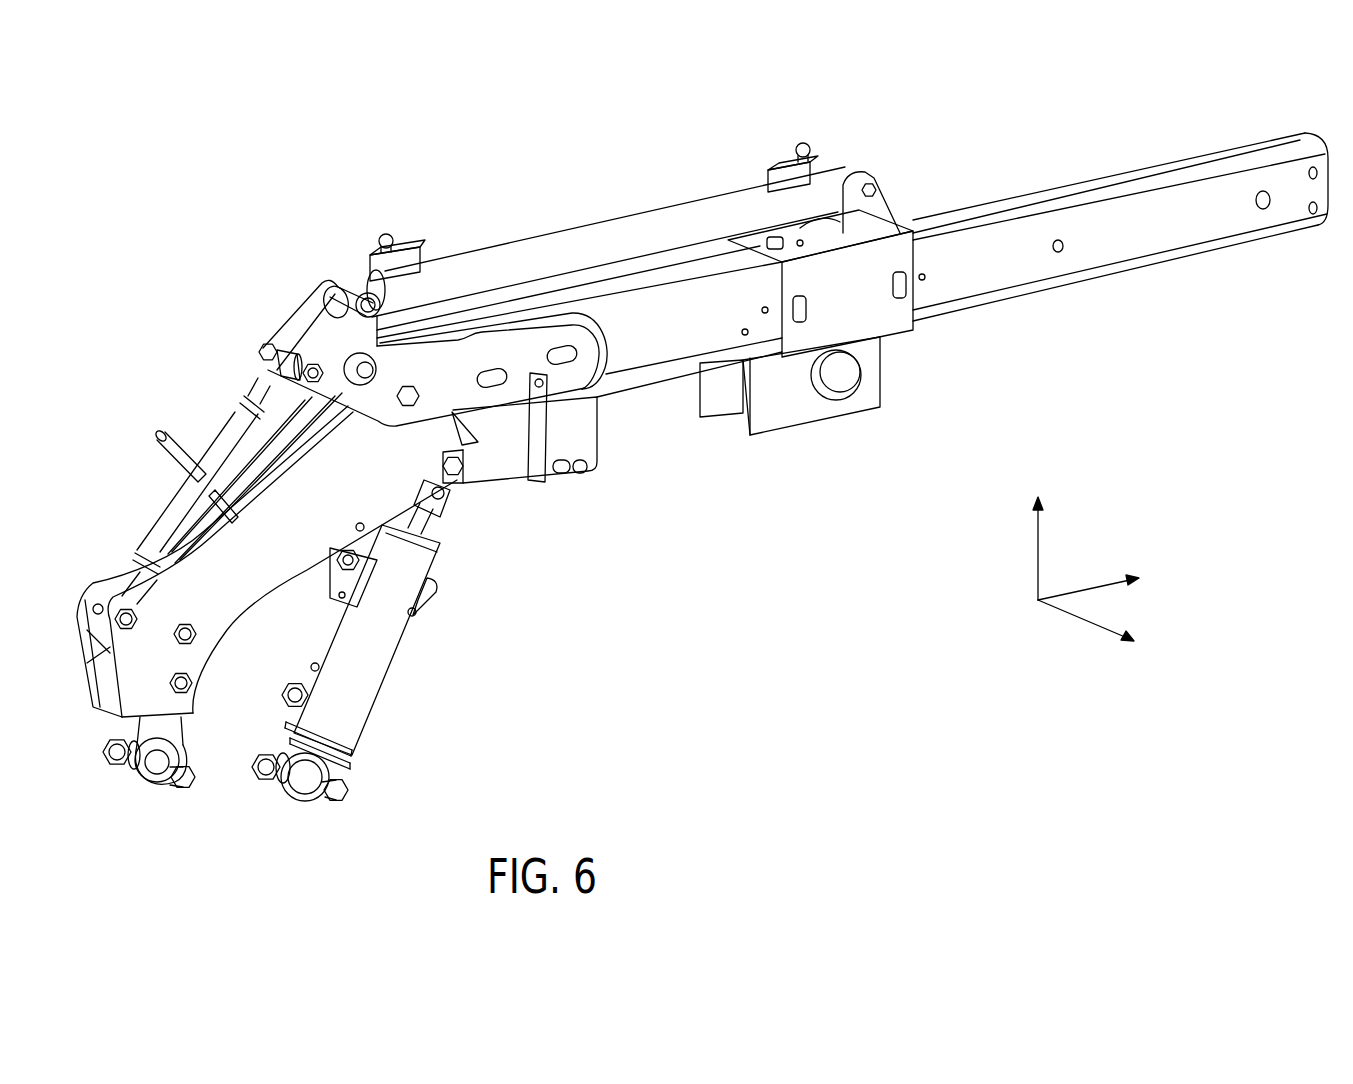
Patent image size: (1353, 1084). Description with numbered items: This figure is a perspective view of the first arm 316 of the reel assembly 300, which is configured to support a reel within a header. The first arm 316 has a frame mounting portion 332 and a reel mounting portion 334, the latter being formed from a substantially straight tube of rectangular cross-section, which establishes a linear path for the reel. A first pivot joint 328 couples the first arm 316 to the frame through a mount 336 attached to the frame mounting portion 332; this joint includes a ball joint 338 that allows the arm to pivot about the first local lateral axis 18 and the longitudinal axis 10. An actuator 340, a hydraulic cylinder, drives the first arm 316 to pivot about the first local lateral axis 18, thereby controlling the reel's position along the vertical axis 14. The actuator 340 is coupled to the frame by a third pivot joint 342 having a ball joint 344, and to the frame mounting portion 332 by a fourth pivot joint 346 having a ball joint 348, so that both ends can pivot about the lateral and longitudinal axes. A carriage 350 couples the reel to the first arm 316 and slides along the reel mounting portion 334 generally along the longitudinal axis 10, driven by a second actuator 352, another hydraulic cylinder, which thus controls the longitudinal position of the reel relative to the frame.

The reel assembly 300 is at (400, 220).
The second actuator 352 is at (597, 222).
The first arm 316 is at (1120, 214).
The reel mounting portion 334 is at (1213, 253).
The carriage 350 is at (880, 370).
The frame mounting portion 332 is at (307, 490).
The fourth pivot joint 346 is at (520, 398).
The ball joint 348 is at (472, 499).
The actuator 340 is at (384, 680).
The mount 336 is at (175, 740).
The first pivot joint 328 is at (150, 782).
The ball joint 338 is at (267, 647).
The third pivot joint 342 is at (307, 800).
The ball joint 344 is at (363, 692).
The vertical axis 14 is at (1038, 552).
The longitudinal axis 10 is at (1093, 587).
The first local lateral axis 18 is at (1077, 617).